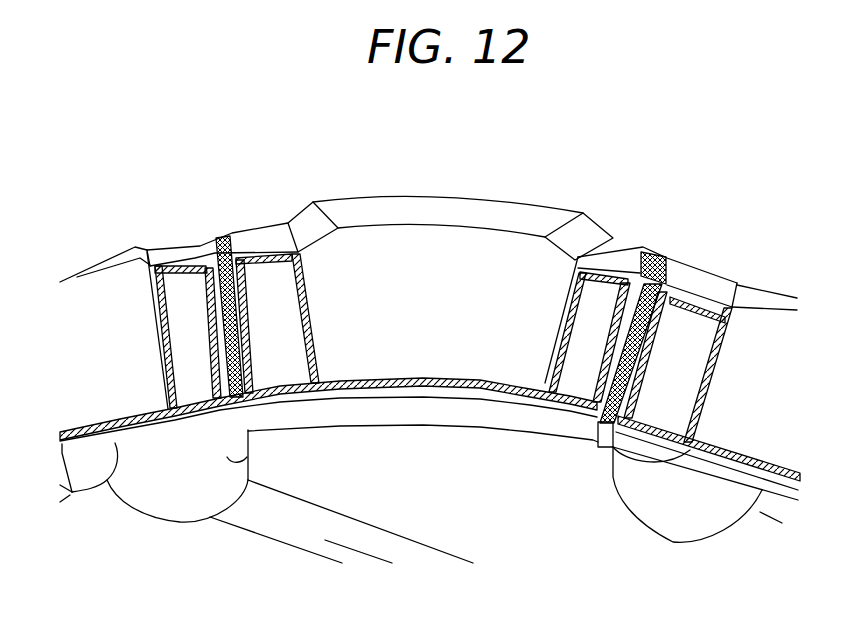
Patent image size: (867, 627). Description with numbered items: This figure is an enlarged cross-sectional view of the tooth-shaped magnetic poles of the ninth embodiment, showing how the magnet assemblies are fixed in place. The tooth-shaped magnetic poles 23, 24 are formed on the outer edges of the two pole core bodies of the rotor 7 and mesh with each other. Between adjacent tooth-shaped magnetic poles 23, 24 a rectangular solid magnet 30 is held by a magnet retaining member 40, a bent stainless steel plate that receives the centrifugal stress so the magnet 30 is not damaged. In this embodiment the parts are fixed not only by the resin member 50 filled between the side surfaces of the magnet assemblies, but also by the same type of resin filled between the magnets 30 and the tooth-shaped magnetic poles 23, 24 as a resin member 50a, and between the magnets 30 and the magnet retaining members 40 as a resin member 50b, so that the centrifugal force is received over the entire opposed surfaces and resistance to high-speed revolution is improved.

The rotor 7 is at (303, 214).
The tooth-shaped magnetic pole 23 is at (440, 196).
The tooth-shaped magnetic pole 24 is at (93, 263).
The magnet 30 is at (288, 286).
The magnet retaining member 40 is at (397, 390).
The resin member 50 is at (157, 320).
The resin member 50a is at (313, 333).
The resin member 50b is at (465, 380).